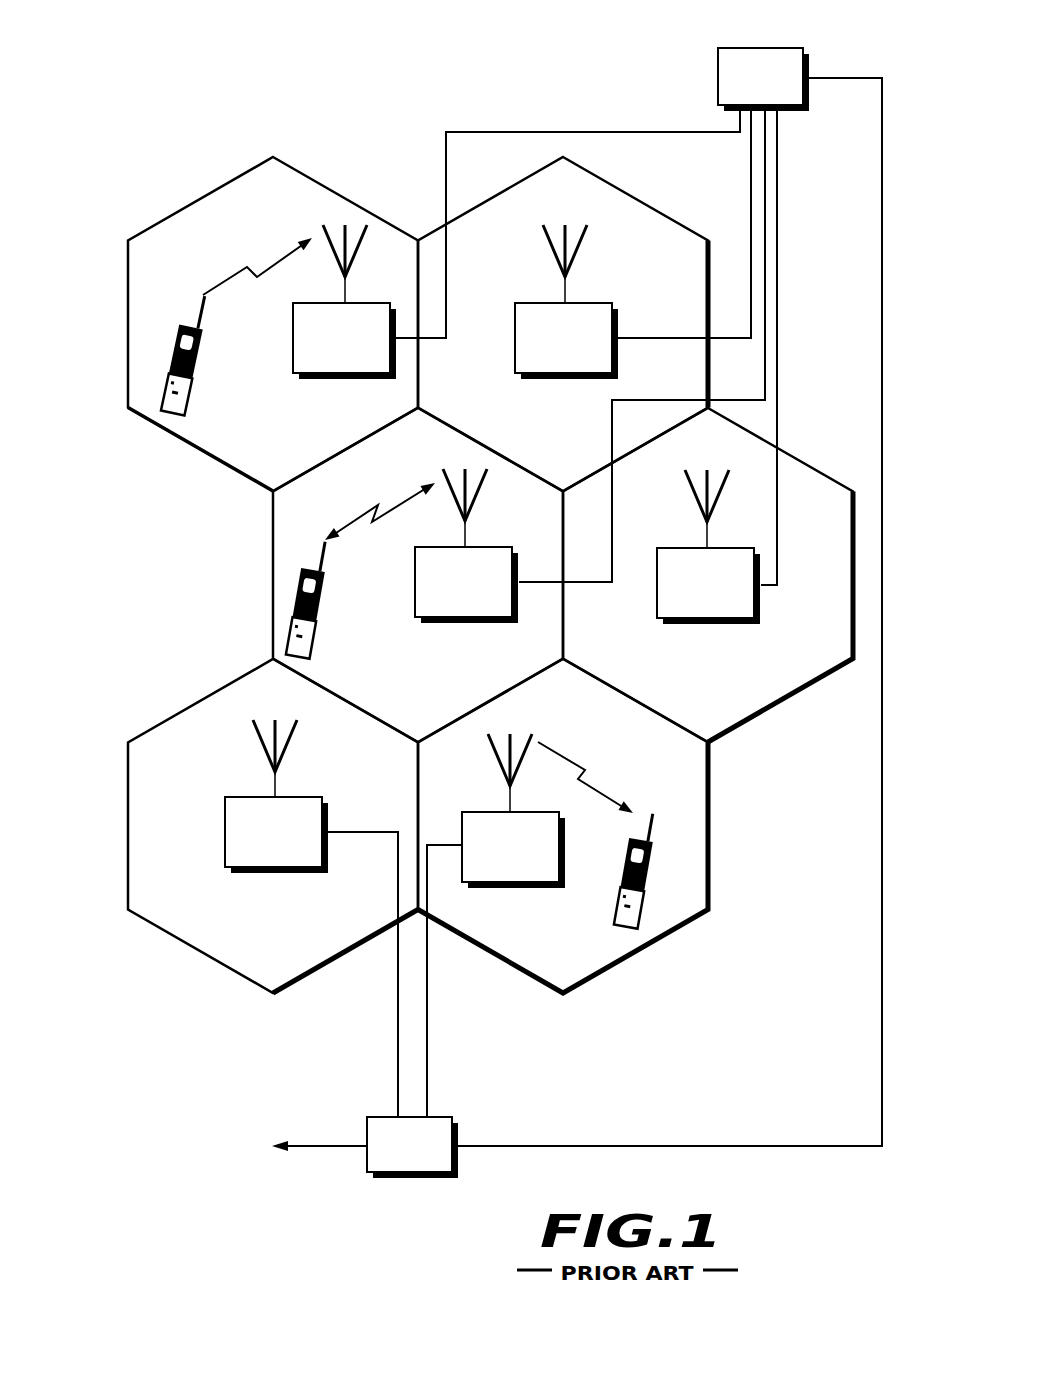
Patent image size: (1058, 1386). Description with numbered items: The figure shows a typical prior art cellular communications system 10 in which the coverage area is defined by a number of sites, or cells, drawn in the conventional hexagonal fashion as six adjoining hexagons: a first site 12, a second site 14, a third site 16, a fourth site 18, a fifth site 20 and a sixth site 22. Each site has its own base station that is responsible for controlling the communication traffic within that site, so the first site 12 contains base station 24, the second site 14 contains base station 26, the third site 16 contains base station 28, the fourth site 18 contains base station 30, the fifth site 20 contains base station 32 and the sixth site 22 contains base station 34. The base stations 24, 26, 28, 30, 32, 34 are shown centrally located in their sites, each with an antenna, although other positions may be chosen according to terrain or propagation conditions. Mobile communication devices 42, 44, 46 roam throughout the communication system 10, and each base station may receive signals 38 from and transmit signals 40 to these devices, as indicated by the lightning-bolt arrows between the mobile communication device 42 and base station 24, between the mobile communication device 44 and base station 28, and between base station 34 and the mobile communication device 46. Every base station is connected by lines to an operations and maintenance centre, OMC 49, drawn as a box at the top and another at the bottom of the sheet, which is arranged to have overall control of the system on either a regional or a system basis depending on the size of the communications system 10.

The cellular communications system 10 is at (268, 18).
The site 12 is at (243, 172).
The site 14 is at (635, 193).
The site 16 is at (272, 636).
The site 18 is at (800, 458).
The site 20 is at (188, 700).
The site 22 is at (705, 808).
The base station 24 is at (350, 378).
The base station 26 is at (582, 303).
The base station 28 is at (487, 624).
The base station 30 is at (715, 625).
The base station 32 is at (225, 823).
The base station 34 is at (497, 888).
The receive signals 38 is at (243, 263).
The transmit signals 40 is at (590, 772).
The mobile communication device 42 is at (197, 408).
The mobile communication device 44 is at (300, 588).
The mobile communication device 46 is at (657, 890).
The operations and maintenance centre (OMC) 49 is at (753, 48).